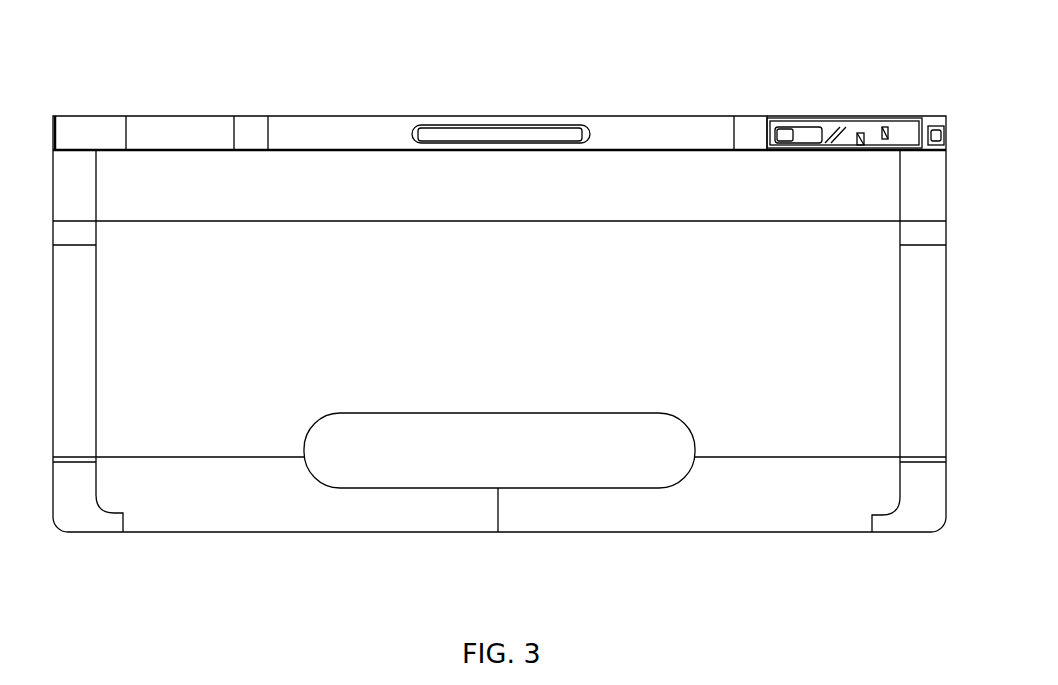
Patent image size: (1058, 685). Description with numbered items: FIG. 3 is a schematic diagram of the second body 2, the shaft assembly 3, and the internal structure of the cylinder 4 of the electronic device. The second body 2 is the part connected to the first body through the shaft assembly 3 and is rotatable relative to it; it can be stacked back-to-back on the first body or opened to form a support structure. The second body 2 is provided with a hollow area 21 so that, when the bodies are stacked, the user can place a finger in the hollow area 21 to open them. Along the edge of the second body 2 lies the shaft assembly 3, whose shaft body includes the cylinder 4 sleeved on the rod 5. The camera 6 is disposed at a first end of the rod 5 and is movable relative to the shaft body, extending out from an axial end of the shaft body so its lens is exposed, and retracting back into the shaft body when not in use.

The second body 2 is at (238, 335).
The hollow area 21 is at (453, 457).
The shaft assembly 3 is at (387, 133).
The cylinder 4 is at (792, 117).
The rod 5 is at (877, 133).
The camera 6 is at (935, 128).